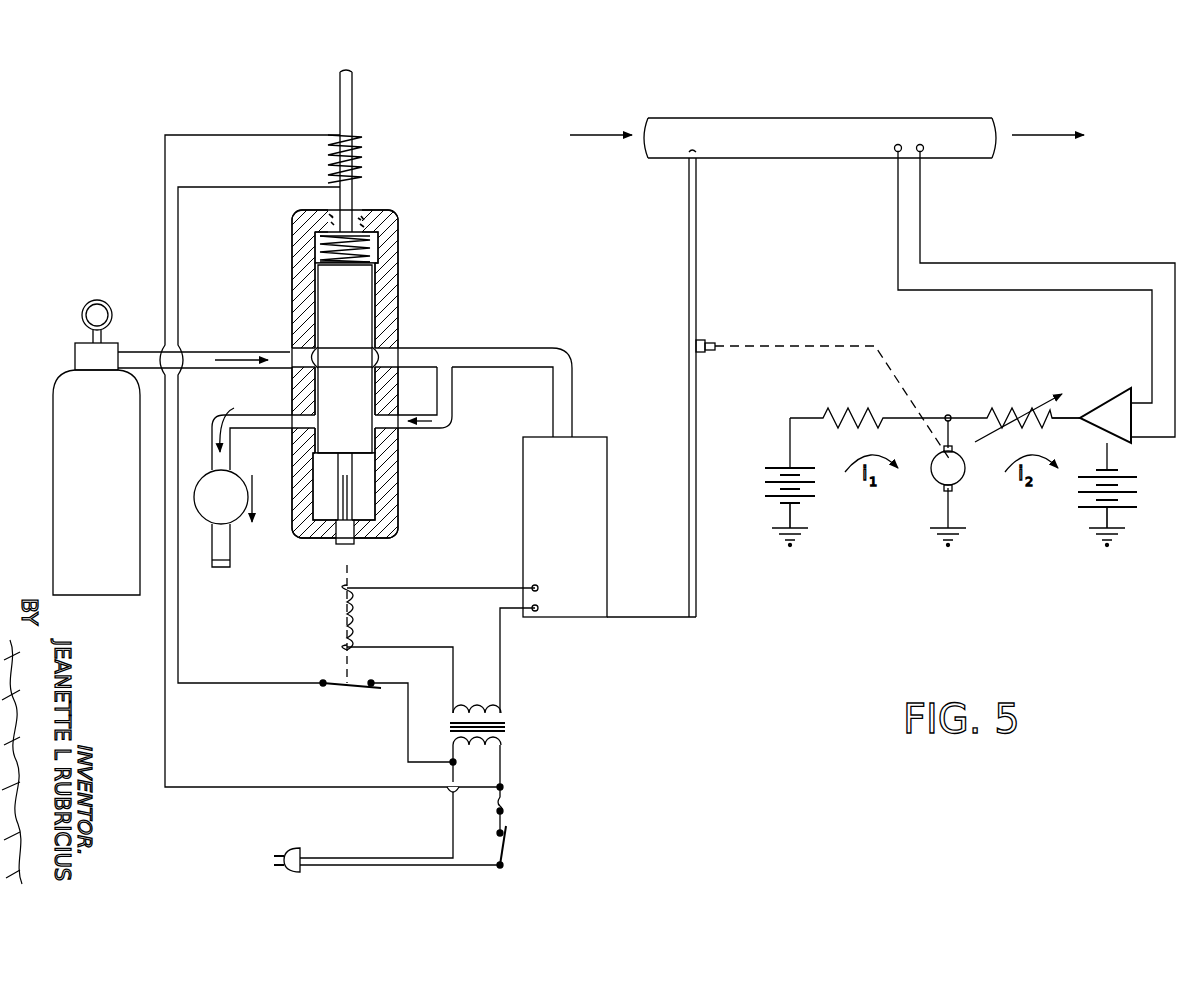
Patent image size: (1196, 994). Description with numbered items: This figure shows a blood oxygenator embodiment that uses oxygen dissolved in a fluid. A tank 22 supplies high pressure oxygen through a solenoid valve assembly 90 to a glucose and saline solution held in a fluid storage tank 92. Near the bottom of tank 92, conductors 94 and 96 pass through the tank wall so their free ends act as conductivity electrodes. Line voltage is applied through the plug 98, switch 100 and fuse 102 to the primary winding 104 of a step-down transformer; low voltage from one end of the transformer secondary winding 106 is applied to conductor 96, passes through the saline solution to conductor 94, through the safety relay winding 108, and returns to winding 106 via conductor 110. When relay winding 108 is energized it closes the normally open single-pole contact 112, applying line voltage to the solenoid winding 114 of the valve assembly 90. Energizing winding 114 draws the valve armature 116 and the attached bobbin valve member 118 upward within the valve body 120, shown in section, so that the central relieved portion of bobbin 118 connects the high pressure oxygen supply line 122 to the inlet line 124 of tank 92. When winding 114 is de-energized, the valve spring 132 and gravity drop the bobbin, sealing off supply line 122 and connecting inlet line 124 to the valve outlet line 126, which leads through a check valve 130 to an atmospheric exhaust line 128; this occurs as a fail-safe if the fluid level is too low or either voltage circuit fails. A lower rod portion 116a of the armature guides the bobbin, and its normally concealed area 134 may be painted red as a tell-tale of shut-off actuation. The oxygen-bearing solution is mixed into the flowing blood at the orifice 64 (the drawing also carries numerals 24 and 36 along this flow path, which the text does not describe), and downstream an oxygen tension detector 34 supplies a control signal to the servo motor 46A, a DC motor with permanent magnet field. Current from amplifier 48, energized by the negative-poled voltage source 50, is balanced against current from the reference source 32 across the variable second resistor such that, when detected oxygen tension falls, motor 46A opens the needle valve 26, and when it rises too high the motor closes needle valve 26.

The tank 22 is at (72, 405).
The sampling tube 24 is at (689, 268).
The needle valve 26 is at (702, 340).
The reference source 32 is at (762, 452).
The oxygen tension detector 34 is at (910, 140).
The duct 36 is at (988, 102).
The servo motor 46A is at (940, 476).
The amplifier 48 is at (1118, 408).
The negative-poled voltage source 50 is at (1148, 466).
The orifice 64 is at (690, 158).
The solenoid valve assembly 90 is at (450, 296).
The fluid storage tank 92 is at (598, 553).
The conductor 94 is at (478, 588).
The conductor 96 is at (504, 652).
The plug 98 is at (300, 852).
The switch 100 is at (506, 825).
The fuse 102 is at (504, 800).
The primary winding 104 is at (500, 745).
The transformer secondary winding 106 is at (493, 714).
The safety relay winding 108 is at (344, 621).
The conductor 110 is at (442, 647).
The single-pole contact 112 is at (356, 686).
The solenoid winding 114 is at (362, 152).
The valve armature 116 is at (340, 93).
The lower rod portion 116a is at (338, 545).
The bobbin valve member 118 is at (335, 300).
The valve body 120 is at (343, 374).
The high pressure oxygen supply line 122 is at (255, 353).
The inlet line 124 is at (505, 352).
The valve outlet line 126 is at (262, 418).
The atmospheric exhaust line 128 is at (214, 566).
The check valve 130 is at (238, 527).
The valve spring 132 is at (378, 246).
The normally concealed area 134 is at (348, 500).